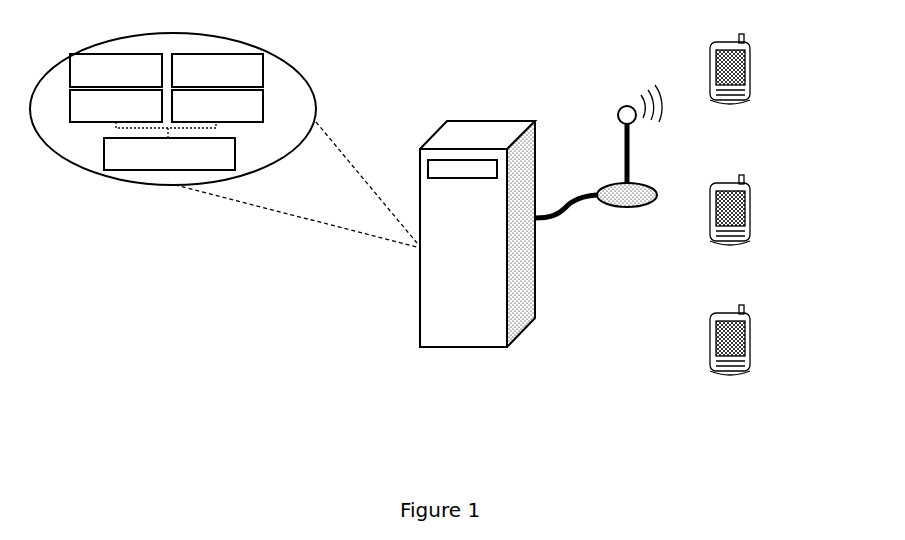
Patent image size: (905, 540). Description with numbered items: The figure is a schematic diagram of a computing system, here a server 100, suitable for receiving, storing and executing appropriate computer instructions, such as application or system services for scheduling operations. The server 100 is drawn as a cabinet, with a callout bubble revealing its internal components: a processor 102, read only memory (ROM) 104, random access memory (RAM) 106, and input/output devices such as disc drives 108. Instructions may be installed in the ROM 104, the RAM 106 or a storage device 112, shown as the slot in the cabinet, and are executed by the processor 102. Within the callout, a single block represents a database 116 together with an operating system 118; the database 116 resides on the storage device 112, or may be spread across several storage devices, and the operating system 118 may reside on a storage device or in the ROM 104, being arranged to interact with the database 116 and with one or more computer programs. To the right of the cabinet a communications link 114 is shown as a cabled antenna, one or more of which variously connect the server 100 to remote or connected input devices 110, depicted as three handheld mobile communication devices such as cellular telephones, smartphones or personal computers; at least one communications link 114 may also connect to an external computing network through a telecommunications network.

The server 100 is at (418, 293).
The processor 102 is at (116, 70).
The read only memory (ROM) 104 is at (217, 70).
The random access memory (RAM) 106 is at (116, 106).
The disc drives 108 is at (217, 106).
The input devices 110 is at (768, 342).
The storage device 112 is at (478, 160).
The communications link 114 is at (598, 169).
The database 116 is at (169, 154).
The operating system 118 is at (169, 154).